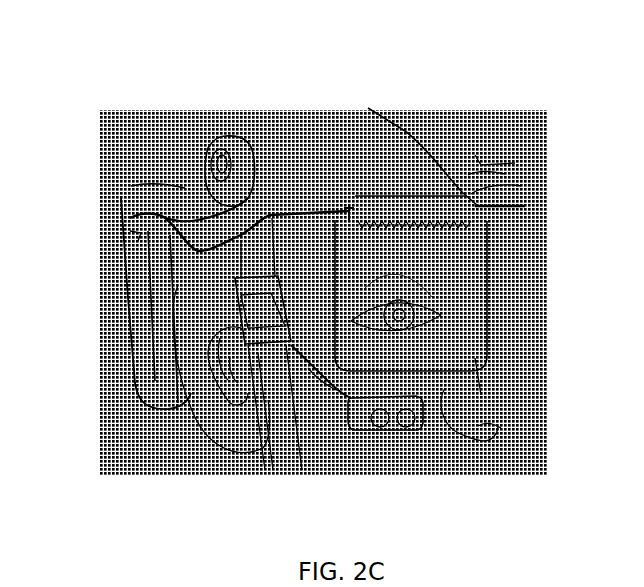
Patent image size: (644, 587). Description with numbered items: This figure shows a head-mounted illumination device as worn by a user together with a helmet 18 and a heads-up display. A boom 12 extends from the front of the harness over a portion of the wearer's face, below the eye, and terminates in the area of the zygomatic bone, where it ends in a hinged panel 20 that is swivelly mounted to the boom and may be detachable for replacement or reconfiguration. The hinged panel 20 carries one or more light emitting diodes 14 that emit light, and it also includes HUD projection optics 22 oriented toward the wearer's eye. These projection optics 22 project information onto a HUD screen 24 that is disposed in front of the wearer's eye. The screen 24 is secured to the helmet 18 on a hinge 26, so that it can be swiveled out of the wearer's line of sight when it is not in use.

The boom 12 is at (318, 395).
The light emitting diodes 14 is at (373, 420).
The helmet 18 is at (343, 115).
The hinged panel 20 is at (415, 422).
The HUD projection optics 22 is at (398, 424).
The HUD screen 24 is at (470, 348).
The hinge 26 is at (342, 205).